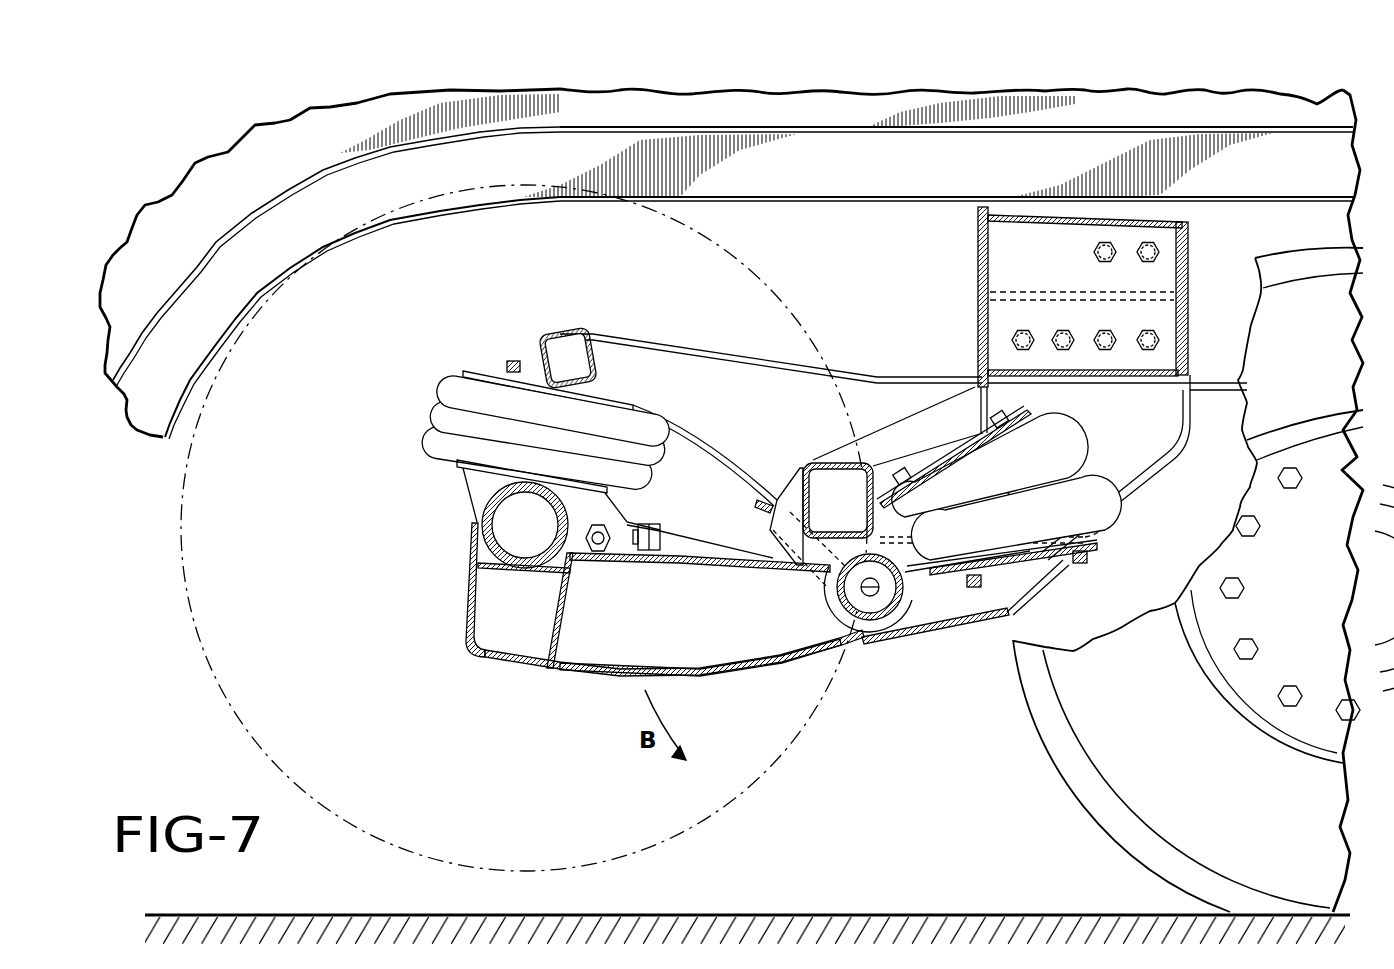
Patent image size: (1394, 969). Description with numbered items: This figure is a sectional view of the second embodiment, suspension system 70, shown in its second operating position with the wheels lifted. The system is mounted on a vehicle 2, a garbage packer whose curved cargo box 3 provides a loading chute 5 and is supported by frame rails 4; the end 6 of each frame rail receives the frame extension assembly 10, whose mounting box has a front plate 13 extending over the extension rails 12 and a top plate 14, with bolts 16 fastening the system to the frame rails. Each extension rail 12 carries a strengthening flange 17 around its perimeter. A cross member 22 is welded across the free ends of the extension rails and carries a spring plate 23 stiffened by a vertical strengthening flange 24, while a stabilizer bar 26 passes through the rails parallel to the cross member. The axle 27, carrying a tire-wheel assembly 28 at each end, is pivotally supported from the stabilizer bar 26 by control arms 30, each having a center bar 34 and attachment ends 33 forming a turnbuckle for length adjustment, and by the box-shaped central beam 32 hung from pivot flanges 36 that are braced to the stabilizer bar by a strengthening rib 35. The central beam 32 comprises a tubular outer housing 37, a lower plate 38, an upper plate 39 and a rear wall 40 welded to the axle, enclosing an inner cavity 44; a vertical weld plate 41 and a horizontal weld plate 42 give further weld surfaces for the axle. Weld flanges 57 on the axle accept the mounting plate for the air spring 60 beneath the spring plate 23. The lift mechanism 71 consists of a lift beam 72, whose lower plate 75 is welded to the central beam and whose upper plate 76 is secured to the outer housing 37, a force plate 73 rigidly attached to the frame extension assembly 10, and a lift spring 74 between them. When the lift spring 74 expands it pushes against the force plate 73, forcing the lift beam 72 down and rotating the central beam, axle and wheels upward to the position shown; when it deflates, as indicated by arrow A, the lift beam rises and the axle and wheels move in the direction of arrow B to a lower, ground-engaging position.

The vehicle 2 is at (845, 204).
The cargo box 3 is at (1312, 112).
The frame rail 4 is at (1237, 296).
The loading chute 5 is at (152, 279).
The end 6 is at (1010, 204).
The frame extension assembly 10 is at (869, 345).
The extension rail 12 is at (737, 382).
The front plate 13 is at (977, 248).
The top plate 14 is at (1066, 217).
The bolts 16 is at (1018, 340).
The strengthening flange 17 is at (1143, 490).
The cross member 22 is at (551, 342).
The spring plate 23 is at (470, 370).
The vertical strengthening flange 24 is at (533, 352).
The stabilizer bar 26 is at (840, 465).
The axle 27 is at (485, 547).
The tire-wheel assembly 28 is at (800, 760).
The control arm 30 is at (712, 533).
The central beam 32 is at (515, 666).
The attachment end 33 is at (654, 524).
The center bar 34 is at (732, 546).
The strengthening rib 35 is at (823, 590).
The pivot flange 36 is at (792, 498).
The tubular outer housing 37 is at (848, 612).
The lower plate 38 is at (740, 668).
The upper plate 39 is at (718, 567).
The rear wall 40 is at (466, 602).
The vertical weld plate 41 is at (560, 607).
The horizontal weld plate 42 is at (527, 580).
The inner cavity 44 is at (663, 637).
The weld flange 57 is at (478, 493).
The air spring 60 is at (452, 410).
The suspension system 70 is at (404, 683).
The lift mechanism 71 is at (1080, 421).
The lift beam 72 is at (922, 640).
The force plate 73 is at (955, 453).
The lift spring 74 is at (1062, 457).
The lower plate 75 is at (1022, 597).
The upper plate 76 is at (1035, 560).